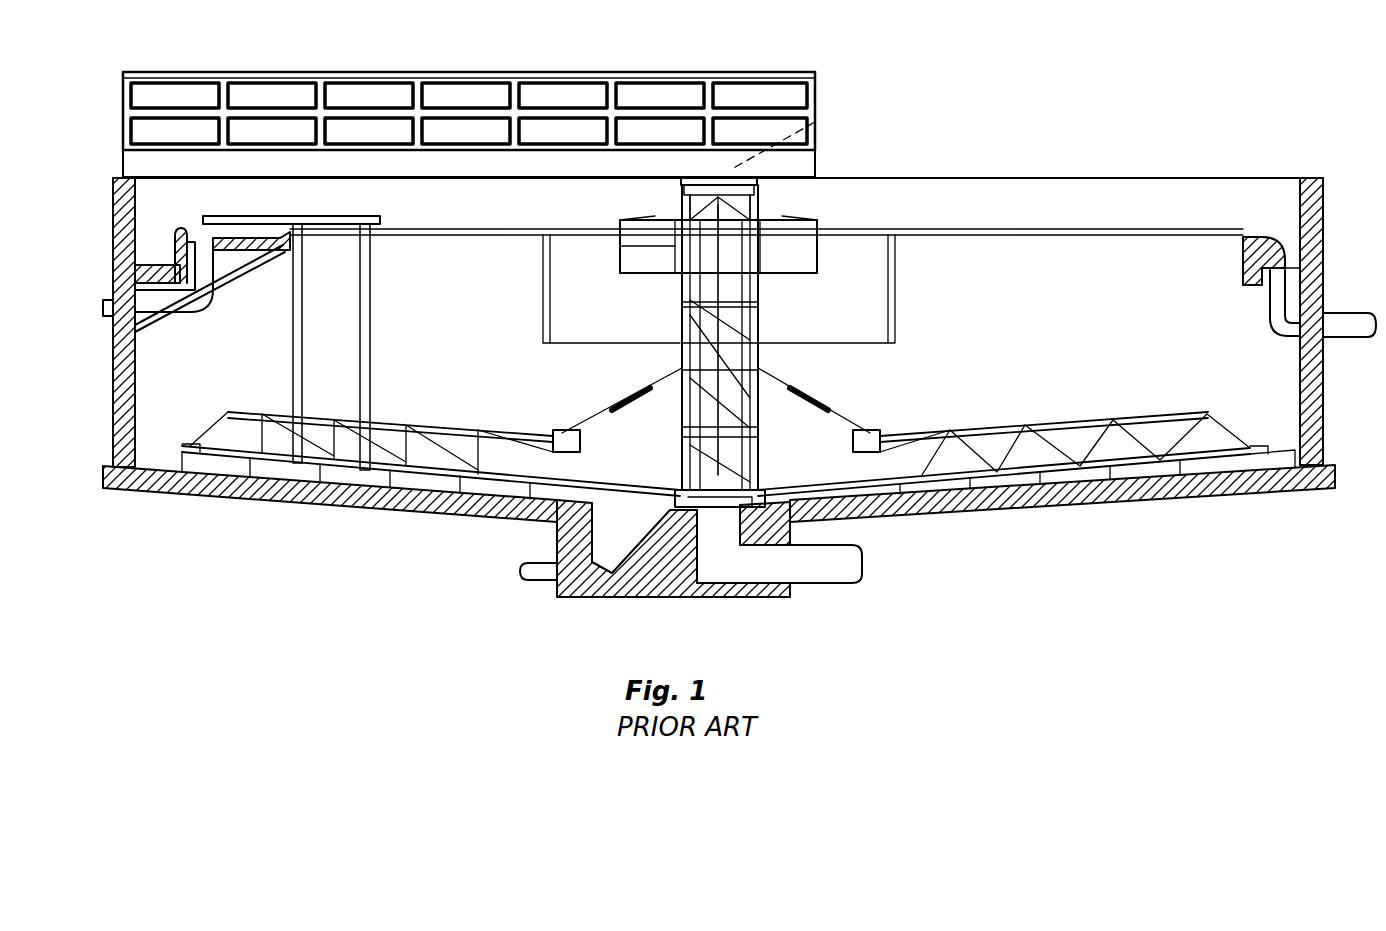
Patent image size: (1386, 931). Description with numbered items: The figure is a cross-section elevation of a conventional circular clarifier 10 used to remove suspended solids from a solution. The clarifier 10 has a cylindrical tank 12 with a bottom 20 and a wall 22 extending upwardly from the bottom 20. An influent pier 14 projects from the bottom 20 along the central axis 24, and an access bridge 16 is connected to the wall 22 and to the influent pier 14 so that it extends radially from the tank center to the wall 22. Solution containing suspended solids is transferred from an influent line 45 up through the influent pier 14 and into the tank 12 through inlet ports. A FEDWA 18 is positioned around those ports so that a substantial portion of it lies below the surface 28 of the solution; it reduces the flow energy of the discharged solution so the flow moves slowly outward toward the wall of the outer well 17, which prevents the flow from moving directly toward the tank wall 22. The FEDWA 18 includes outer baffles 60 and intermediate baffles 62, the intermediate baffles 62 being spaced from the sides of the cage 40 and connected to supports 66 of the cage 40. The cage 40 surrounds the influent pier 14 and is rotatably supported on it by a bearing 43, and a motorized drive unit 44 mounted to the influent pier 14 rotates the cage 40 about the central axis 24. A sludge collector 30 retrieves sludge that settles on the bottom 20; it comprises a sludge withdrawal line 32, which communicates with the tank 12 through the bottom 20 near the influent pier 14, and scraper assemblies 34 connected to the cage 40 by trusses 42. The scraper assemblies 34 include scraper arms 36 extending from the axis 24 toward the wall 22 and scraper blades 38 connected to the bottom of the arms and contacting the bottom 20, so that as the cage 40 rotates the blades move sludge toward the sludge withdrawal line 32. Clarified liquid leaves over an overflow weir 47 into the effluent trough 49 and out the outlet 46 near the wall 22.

The clarifier 10 is at (913, 106).
The tank 12 is at (1176, 178).
The influent pier 14 is at (730, 328).
The access bridge 16 is at (480, 72).
The outer well 17 is at (890, 312).
The FEDWA 18 is at (822, 253).
The bottom 20 is at (1050, 503).
The wall 22 is at (1312, 366).
The central axis 24 is at (712, 418).
The surface 28 is at (1050, 231).
The sludge collector 30 is at (886, 424).
The sludge withdrawal line 32 is at (532, 572).
The scraper assemblies 34 is at (428, 410).
The scraper arms 36 is at (270, 412).
The scraper blades 38 is at (326, 472).
The cage 40 is at (682, 342).
The trusses 42 is at (628, 399).
The bearing 43 is at (705, 178).
The motorized drive unit 44 is at (794, 139).
The influent line 45 is at (830, 572).
The outlet 46 is at (1270, 302).
The overflow weir 47 is at (1240, 238).
The effluent trough 49 is at (1275, 266).
The outer baffles 60 is at (797, 240).
The intermediate baffles 62 is at (685, 240).
The supports 66 is at (658, 222).